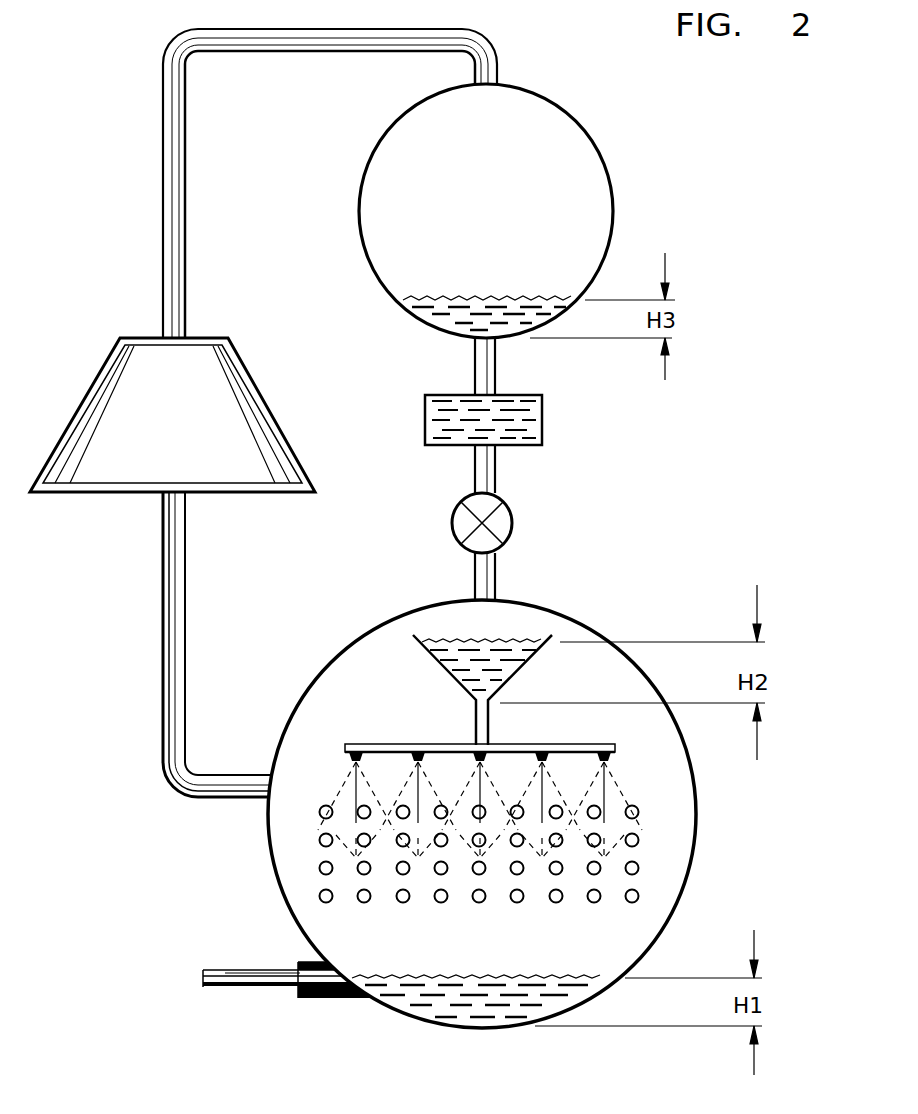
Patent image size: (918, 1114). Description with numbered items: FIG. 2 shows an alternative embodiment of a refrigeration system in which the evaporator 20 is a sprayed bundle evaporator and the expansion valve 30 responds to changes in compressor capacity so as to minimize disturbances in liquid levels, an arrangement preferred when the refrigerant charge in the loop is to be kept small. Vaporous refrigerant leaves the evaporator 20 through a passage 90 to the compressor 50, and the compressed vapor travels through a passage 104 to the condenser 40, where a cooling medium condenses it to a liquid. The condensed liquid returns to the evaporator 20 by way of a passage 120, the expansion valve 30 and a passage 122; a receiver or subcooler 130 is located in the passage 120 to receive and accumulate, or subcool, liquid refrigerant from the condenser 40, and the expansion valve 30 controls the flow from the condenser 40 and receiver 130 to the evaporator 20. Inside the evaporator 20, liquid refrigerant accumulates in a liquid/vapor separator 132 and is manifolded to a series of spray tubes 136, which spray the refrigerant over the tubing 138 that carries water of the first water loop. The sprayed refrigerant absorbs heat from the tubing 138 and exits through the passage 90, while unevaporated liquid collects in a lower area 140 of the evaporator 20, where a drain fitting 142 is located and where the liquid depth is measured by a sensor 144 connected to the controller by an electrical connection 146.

The evaporator 20 is at (295, 923).
The expansion valve 30 is at (512, 517).
The condenser 40 is at (611, 178).
The compressor 50 is at (93, 385).
The passage 90 is at (211, 771).
The passage 104 is at (492, 52).
The passage 120 is at (475, 358).
The passage 122 is at (475, 572).
The receiver or subcooler 130 is at (542, 420).
The liquid/vapor separator 132 is at (534, 640).
The spray tubes 136 is at (350, 759).
The tubing 138 is at (319, 896).
The lower area 140 is at (480, 978).
The drain fitting 142 is at (340, 1000).
The sensor 144 is at (270, 990).
The electrical connection 146 is at (222, 990).